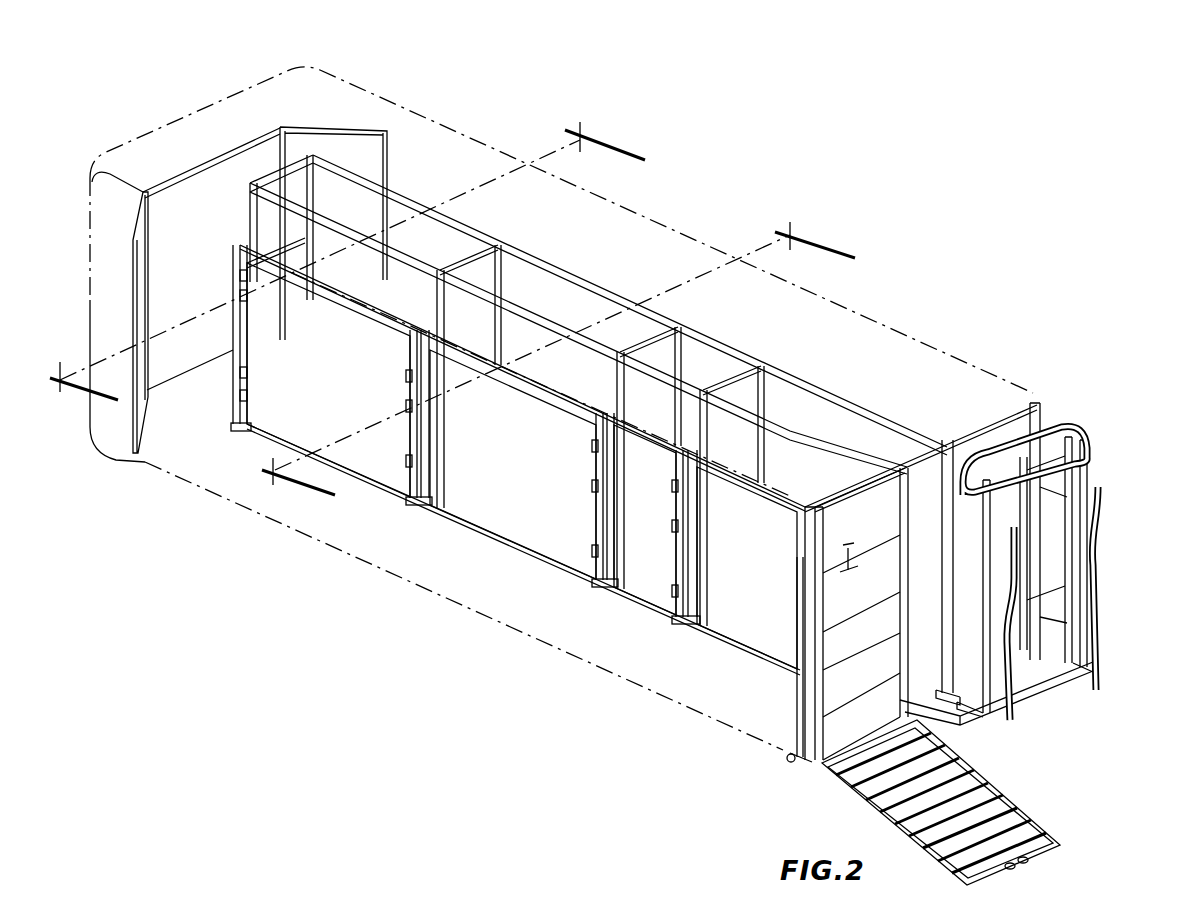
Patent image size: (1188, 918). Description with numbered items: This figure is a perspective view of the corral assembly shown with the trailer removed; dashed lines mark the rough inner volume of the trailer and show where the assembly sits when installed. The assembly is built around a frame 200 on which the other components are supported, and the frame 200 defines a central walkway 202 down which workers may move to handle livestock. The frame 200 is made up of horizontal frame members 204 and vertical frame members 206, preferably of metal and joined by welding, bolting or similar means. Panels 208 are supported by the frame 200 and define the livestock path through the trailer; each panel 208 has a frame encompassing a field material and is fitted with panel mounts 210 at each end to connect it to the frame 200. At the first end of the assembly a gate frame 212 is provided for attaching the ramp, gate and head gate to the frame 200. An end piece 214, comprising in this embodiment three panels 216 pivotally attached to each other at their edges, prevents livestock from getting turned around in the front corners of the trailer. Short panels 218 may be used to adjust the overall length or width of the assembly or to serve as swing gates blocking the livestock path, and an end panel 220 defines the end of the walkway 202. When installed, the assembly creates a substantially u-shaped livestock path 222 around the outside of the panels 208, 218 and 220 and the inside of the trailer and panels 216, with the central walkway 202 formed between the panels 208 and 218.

The frame 200 is at (597, 412).
The central walkway 202 is at (933, 708).
The horizontal frame members 204 is at (602, 328).
The vertical frame members 206 is at (450, 300).
The panels 208 is at (522, 466).
The panel mounts 210 is at (678, 620).
The gate frame 212 is at (1046, 402).
The end piece 214 is at (207, 150).
The panels 216 is at (130, 220).
The short panels 218 is at (645, 520).
The end panel 220 is at (292, 240).
The livestock path 222 is at (216, 449).